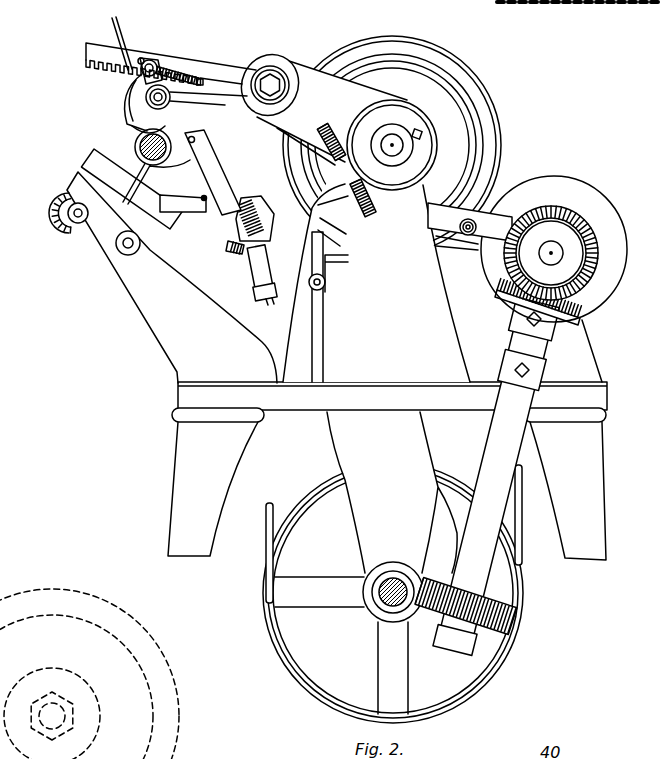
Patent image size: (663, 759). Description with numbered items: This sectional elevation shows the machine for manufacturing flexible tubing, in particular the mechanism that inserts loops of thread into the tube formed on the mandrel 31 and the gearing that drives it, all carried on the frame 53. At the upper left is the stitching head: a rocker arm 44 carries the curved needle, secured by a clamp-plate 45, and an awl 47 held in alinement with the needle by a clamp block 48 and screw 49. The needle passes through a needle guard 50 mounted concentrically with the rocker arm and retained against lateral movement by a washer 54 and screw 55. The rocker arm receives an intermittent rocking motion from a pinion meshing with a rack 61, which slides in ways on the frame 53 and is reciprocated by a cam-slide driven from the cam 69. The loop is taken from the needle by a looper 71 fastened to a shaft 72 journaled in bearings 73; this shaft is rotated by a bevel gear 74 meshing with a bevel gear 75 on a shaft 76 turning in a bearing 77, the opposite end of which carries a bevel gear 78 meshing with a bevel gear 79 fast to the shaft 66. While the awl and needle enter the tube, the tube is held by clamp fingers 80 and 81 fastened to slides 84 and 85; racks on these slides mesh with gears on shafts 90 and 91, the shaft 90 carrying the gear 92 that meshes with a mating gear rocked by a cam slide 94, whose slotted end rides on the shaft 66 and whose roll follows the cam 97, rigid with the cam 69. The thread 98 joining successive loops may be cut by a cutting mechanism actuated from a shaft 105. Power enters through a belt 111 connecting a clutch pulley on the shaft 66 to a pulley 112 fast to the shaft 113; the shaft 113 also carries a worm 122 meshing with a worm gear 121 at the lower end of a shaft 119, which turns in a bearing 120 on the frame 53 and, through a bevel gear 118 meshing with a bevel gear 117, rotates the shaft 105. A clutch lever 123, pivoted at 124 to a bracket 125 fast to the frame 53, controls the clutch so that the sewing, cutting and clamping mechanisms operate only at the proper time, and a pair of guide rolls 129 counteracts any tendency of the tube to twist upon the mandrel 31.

The mandrel 31 is at (118, 150).
The rocker arm 44 is at (136, 110).
The clamp-plate 45 is at (130, 120).
The awl 47 is at (174, 70).
The clamp block 48 is at (153, 62).
The screw 49 is at (142, 58).
The needle guard 50 is at (130, 128).
The frame 53 is at (243, 69).
The washer 54 is at (190, 101).
The screw 55 is at (170, 92).
The rack 61 is at (86, 52).
The shaft 66 is at (397, 141).
The cam 69 is at (400, 38).
The looper 71 is at (205, 138).
The shaft 72 is at (271, 304).
The bearing 73 is at (224, 190).
The bevel gear 74 is at (230, 250).
The bevel gear 75 is at (266, 232).
The shaft 76 is at (238, 226).
The bearing 77 is at (342, 232).
The bevel gear 78 is at (333, 150).
The bevel gear 79 is at (440, 122).
The clamp finger 80 is at (136, 150).
The clamp finger 81 is at (152, 168).
The slide 84 is at (88, 164).
The slide 85 is at (176, 213).
The shaft 90 is at (74, 222).
The shaft 91 is at (126, 248).
The gear 92 is at (55, 212).
The cam slide 94 is at (203, 196).
The cam 97 is at (478, 155).
The thread 98 is at (112, 22).
The shaft 105 is at (555, 250).
The belt 111 is at (267, 605).
The pulley 112 is at (478, 675).
The shaft 113 is at (385, 585).
The bevel gear 117 is at (590, 280).
The bevel gear 118 is at (582, 316).
The shaft 119 is at (536, 357).
The bearing 120 is at (496, 505).
The worm gear 121 is at (514, 621).
The worm 122 is at (375, 612).
The lever 123 is at (335, 258).
The pivot 124 is at (325, 285).
The bracket 125 is at (325, 332).
The guide rolls 129 is at (163, 675).